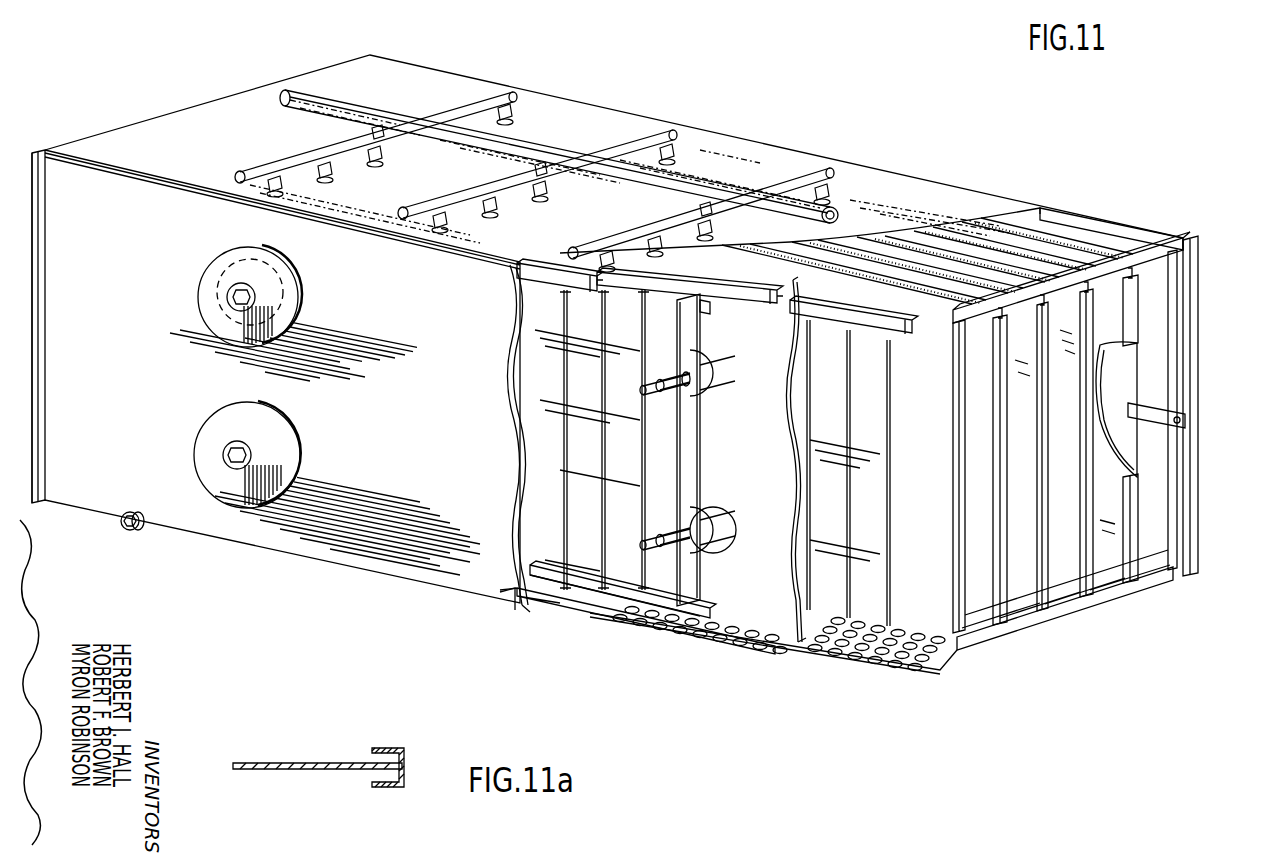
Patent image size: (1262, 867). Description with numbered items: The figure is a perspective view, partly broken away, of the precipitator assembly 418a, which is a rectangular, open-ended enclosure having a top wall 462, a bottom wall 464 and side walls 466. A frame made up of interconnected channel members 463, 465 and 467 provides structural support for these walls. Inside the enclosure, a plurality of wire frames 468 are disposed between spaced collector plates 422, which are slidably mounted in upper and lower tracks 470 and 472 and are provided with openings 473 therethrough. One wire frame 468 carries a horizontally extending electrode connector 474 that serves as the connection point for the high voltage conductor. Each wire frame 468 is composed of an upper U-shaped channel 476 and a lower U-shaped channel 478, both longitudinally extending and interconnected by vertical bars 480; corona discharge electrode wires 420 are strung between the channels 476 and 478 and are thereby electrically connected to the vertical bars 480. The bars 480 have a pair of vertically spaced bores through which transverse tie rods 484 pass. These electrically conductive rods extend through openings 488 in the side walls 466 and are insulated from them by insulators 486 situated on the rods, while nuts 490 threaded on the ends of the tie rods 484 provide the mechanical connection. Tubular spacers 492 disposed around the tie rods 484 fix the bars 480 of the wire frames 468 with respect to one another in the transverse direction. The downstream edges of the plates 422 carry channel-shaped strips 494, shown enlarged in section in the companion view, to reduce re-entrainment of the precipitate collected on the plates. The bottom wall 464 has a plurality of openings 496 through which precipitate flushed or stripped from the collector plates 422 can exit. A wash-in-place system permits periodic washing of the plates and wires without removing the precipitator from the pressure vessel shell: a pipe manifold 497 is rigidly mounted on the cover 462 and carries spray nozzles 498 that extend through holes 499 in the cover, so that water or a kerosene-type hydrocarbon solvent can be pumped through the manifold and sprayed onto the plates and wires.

In FIG. 11, the precipitator assembly 418a is at (928, 131).
In FIG. 11, the corona discharge electrode wires 420 is at (565, 490).
In FIG. 11, the collector plates 422 is at (923, 322).
In FIG. 11a, the collector plates 422 is at (268, 762).
In FIG. 11, the top wall 462 is at (610, 130).
In FIG. 11, the channel member 463 is at (1150, 246).
In FIG. 11, the bottom wall 464 is at (832, 680).
In FIG. 11, the channel member 465 is at (1188, 537).
In FIG. 11, the side walls 466 is at (470, 414).
In FIG. 11, the channel member 467 is at (526, 263).
In FIG. 11, the wire frames 468 is at (625, 318).
In FIG. 11, the upper tracks 470 is at (715, 272).
In FIG. 11, the lower tracks 472 is at (710, 628).
In FIG. 11, the openings 473 is at (716, 520).
In FIG. 11, the electrode connector 474 is at (1165, 405).
In FIG. 11, the upper U-shaped channel 476 is at (712, 305).
In FIG. 11, the lower U-shaped channel 478 is at (712, 612).
In FIG. 11, the vertical bars 480 is at (690, 460).
In FIG. 11, the transverse tie rods 484 is at (227, 303).
In FIG. 11, the insulators 486 is at (292, 301).
In FIG. 11, the openings 488 is at (278, 265).
In FIG. 11, the nuts 490 is at (236, 292).
In FIG. 11, the tubular spacers 492 is at (668, 400).
In FIG. 11, the channel-shaped strips 494 is at (955, 482).
In FIG. 11a, the channel-shaped strips 494 is at (404, 750).
In FIG. 11, the openings 496 is at (884, 666).
In FIG. 11, the pipe manifold 497 is at (290, 103).
In FIG. 11, the spray nozzles 498 is at (270, 166).
In FIG. 11, the holes 499 is at (438, 228).